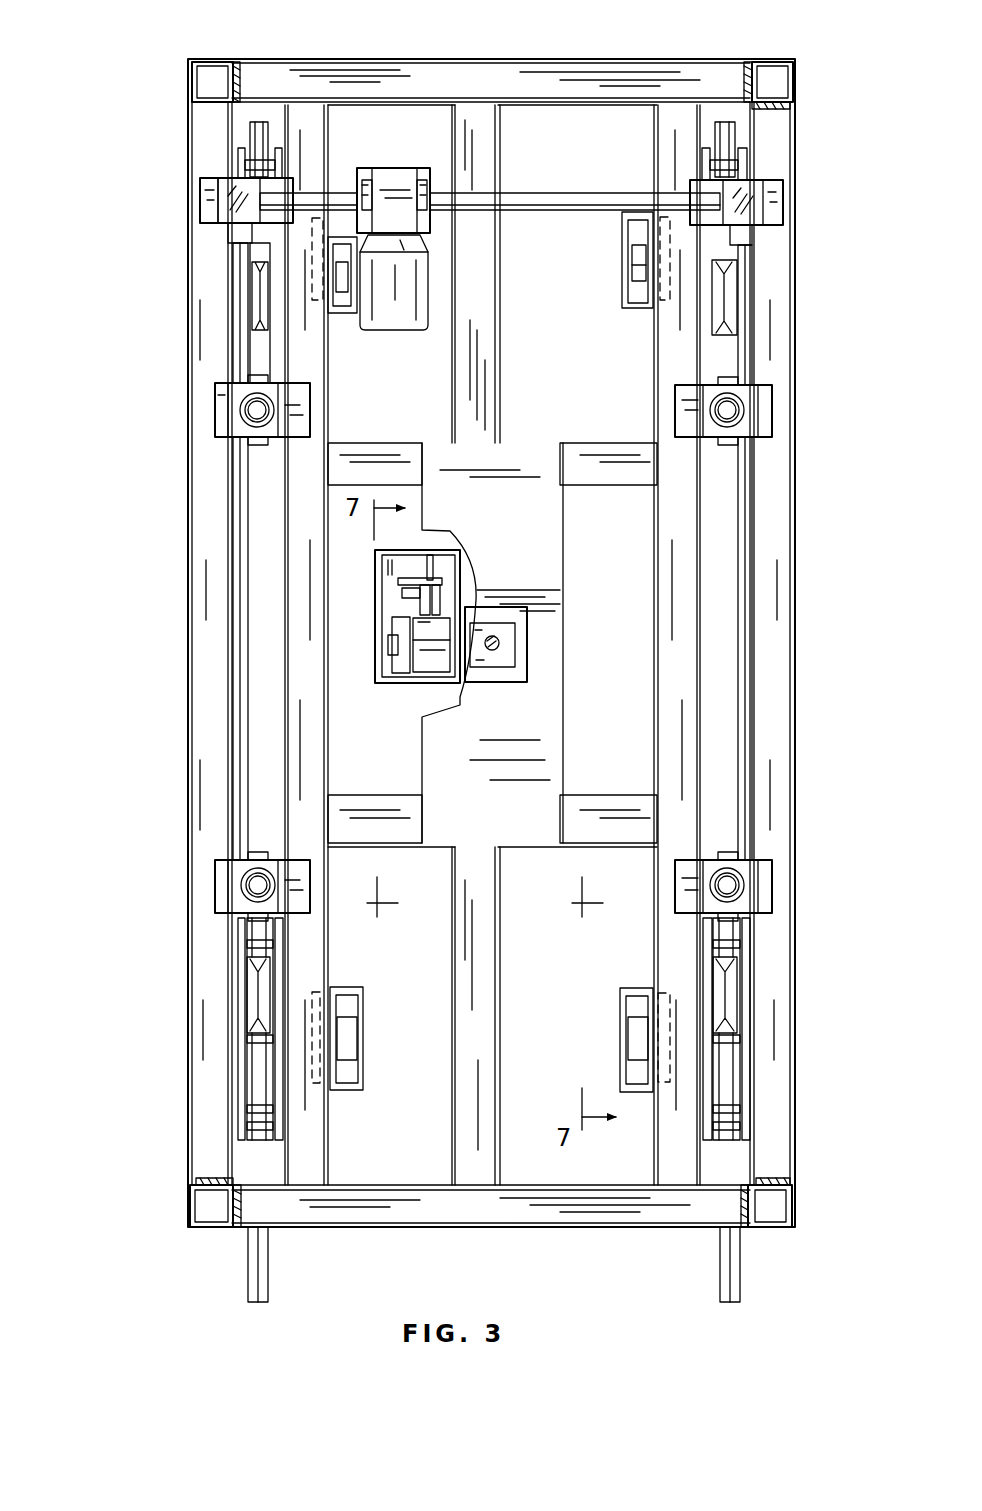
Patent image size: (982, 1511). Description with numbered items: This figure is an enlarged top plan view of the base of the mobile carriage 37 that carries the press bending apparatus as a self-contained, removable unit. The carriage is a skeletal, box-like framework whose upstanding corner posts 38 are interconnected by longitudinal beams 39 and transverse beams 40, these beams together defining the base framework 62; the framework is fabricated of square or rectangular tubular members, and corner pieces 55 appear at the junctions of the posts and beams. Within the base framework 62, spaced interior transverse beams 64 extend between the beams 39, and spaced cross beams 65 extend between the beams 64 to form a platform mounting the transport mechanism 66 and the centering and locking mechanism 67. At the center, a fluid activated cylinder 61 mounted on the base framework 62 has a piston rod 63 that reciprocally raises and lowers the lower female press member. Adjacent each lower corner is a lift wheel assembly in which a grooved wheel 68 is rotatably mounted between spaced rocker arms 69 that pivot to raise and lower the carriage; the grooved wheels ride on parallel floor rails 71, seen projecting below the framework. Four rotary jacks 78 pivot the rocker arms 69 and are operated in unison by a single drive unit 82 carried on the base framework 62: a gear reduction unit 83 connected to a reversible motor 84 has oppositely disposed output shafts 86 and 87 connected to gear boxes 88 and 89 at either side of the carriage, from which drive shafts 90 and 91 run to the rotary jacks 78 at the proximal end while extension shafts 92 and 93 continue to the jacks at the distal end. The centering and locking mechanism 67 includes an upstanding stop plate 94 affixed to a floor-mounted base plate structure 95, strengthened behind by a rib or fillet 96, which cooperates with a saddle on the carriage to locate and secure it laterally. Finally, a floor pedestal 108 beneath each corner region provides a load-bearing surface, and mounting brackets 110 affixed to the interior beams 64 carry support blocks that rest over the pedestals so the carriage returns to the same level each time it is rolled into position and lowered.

The mobile carriage 37 is at (158, 772).
The corner posts 38 is at (192, 74).
The longitudinal beams 39 is at (300, 70).
The transverse beams 40 is at (205, 600).
The corner connecting pieces 55 is at (750, 80).
The fluid activated cylinder 61 is at (516, 640).
The base framework 62 is at (640, 56).
The piston rod 63 is at (495, 652).
The interior transverse beams 64 is at (340, 350).
The cross beams 65 is at (400, 448).
The transport mechanism 66 is at (198, 195).
The centering and locking mechanism 67 is at (427, 637).
The grooved wheel 68 is at (262, 290).
The rocker arms 69 is at (240, 1092).
The rails 71 is at (248, 1268).
The rotary jack 78 is at (265, 405).
The drive unit 82 is at (385, 166).
The gear reduction unit 83 is at (405, 178).
The reversible motor 84 is at (410, 330).
The output shaft 86 is at (312, 195).
The output shaft 87 is at (552, 195).
The gear box 88 is at (235, 186).
The gear box 89 is at (768, 190).
The drive shaft 90 is at (236, 305).
The drive shaft 91 is at (758, 266).
The extension shaft 92 is at (198, 551).
The extension shaft 93 is at (794, 552).
The stop plate 94 is at (400, 581).
The base plate structure 95 is at (392, 605).
The rib or fillet 96 is at (435, 567).
The pedestal 108 is at (633, 228).
The mounting brackets 110 is at (638, 265).